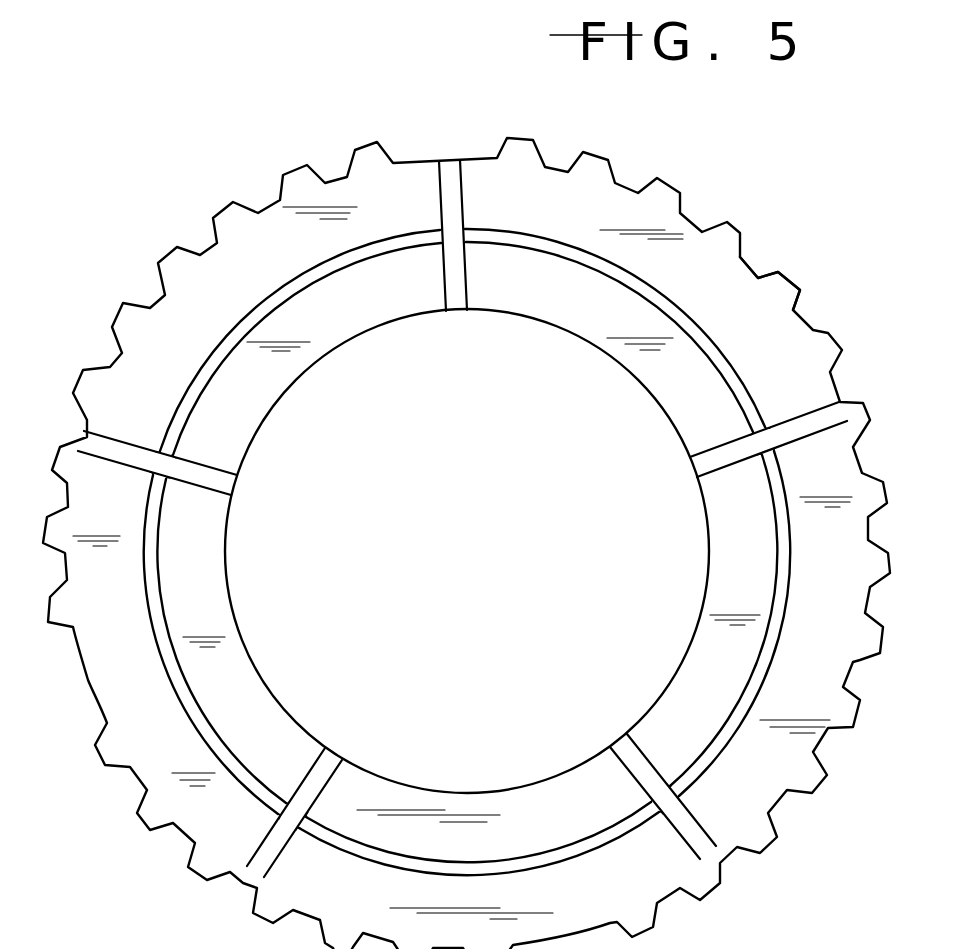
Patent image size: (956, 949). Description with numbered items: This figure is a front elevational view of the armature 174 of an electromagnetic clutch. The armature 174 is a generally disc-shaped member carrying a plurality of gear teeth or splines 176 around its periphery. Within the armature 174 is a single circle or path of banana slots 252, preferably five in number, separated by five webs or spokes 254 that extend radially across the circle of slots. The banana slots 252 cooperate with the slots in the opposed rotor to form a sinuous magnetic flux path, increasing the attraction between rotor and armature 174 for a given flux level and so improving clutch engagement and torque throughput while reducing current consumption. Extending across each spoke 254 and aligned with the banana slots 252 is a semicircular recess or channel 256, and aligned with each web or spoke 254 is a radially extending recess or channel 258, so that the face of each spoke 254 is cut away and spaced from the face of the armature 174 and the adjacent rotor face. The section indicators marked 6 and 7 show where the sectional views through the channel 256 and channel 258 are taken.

The armature 174 is at (600, 204).
The gear teeth or splines 176 is at (779, 283).
The banana slots 252 is at (733, 368).
The webs or spokes 254 is at (227, 480).
The semicircular recess or channel 256 is at (447, 240).
The radially extending recess or channel 258 is at (80, 442).
The section line 6 is at (448, 280).
The section line 7 is at (486, 99).